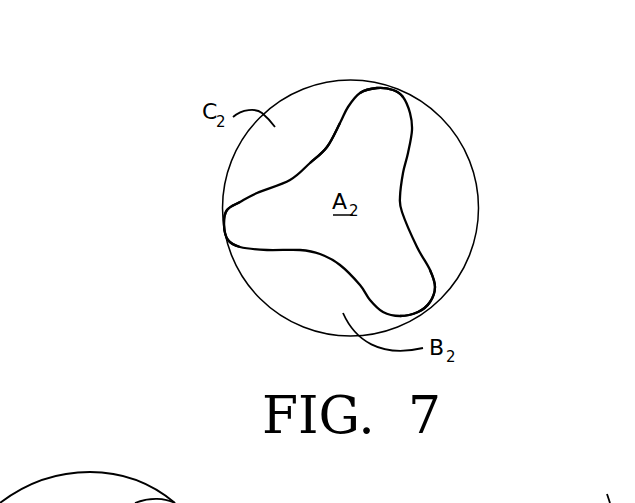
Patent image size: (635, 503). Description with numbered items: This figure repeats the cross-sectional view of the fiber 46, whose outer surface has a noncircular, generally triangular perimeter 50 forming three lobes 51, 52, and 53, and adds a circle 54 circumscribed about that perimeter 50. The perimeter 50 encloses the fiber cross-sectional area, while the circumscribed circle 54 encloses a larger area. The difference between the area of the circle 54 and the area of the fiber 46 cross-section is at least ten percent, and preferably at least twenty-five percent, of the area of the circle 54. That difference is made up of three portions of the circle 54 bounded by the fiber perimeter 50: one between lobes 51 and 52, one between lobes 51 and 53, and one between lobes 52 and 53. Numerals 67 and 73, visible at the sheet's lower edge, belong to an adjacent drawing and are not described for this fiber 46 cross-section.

The fiber 46 is at (390, 116).
The perimeter 50 is at (325, 153).
The lobe 51 is at (227, 233).
The lobe 52 is at (400, 91).
The lobe 53 is at (423, 313).
The circle 54 is at (478, 218).
The arm 67 is at (175, 502).
The member 73 is at (598, 485).